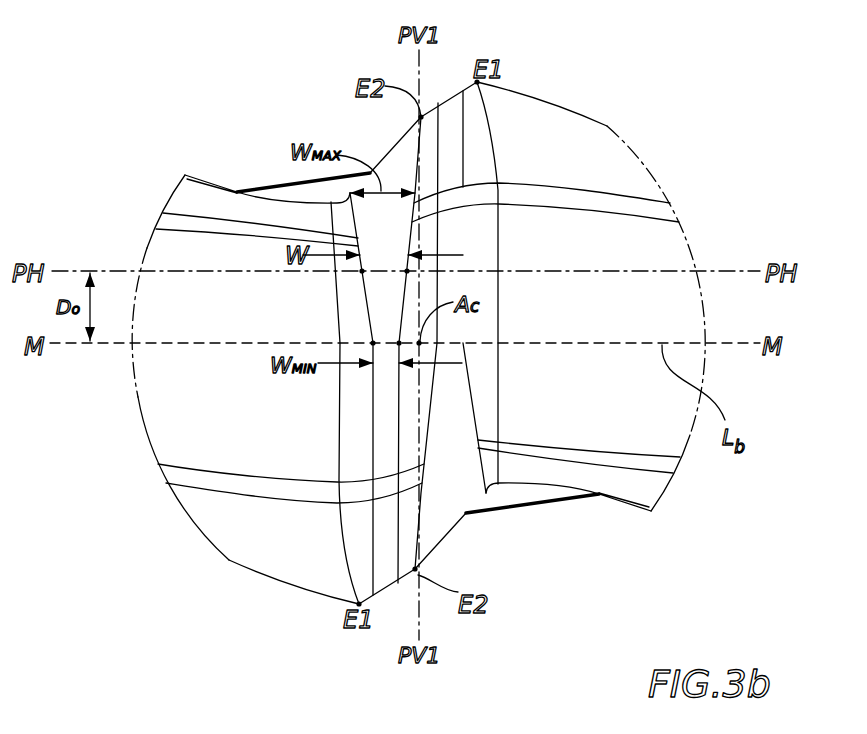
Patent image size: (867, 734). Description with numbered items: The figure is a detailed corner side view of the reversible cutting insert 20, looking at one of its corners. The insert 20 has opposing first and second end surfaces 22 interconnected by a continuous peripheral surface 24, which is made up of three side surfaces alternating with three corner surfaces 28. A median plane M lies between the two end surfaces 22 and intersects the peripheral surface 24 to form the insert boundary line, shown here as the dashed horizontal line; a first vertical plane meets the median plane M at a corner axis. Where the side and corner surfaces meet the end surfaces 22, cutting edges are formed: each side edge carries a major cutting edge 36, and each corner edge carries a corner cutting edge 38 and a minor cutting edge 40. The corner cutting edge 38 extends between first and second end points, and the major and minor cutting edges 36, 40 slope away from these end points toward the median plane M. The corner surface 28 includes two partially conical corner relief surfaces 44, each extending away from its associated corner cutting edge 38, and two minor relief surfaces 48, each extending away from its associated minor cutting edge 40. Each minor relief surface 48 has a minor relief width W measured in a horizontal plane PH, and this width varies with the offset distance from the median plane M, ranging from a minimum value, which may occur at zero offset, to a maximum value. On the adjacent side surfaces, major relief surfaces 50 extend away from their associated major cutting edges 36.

The reversible cutting insert 20 is at (174, 166).
The end surface 22 is at (277, 186).
The peripheral surface 24 is at (647, 252).
The corner surface 28 is at (475, 237).
The major cutting edge 36 is at (552, 105).
The corner cutting edge 38 is at (451, 96).
The minor cutting edge 40 is at (393, 178).
The corner relief surface 44 is at (450, 137).
The minor relief surface 48 is at (376, 178).
The major relief surface 50 is at (557, 177).